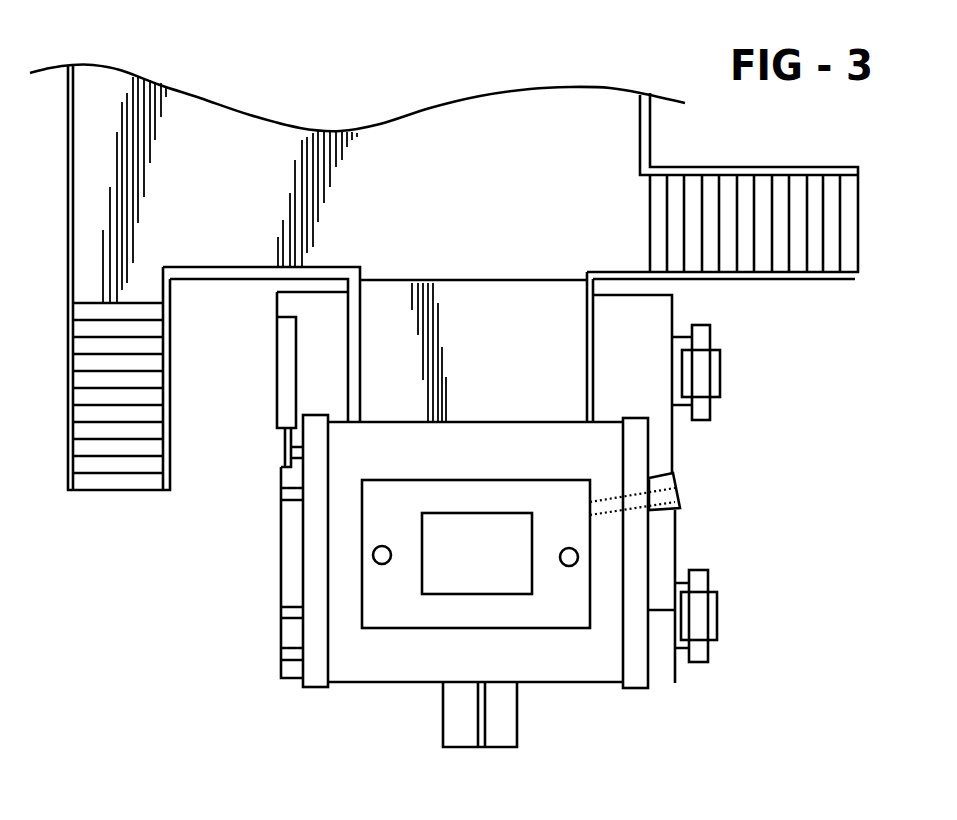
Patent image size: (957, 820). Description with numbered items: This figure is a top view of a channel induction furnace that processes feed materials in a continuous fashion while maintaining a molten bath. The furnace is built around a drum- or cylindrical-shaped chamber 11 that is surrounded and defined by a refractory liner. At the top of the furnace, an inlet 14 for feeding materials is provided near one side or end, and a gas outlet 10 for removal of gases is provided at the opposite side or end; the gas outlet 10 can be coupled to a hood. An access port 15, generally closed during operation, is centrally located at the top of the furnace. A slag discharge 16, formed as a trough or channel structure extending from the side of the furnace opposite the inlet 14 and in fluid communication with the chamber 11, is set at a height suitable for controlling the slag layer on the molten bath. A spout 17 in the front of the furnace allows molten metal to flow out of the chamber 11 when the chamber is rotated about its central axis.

The gas outlet 10 is at (570, 566).
The drum-shaped chamber 11 is at (372, 628).
The inlet 14 is at (385, 545).
The access port 15 is at (476, 538).
The slag discharge 16 is at (680, 508).
The spout 17 is at (480, 747).